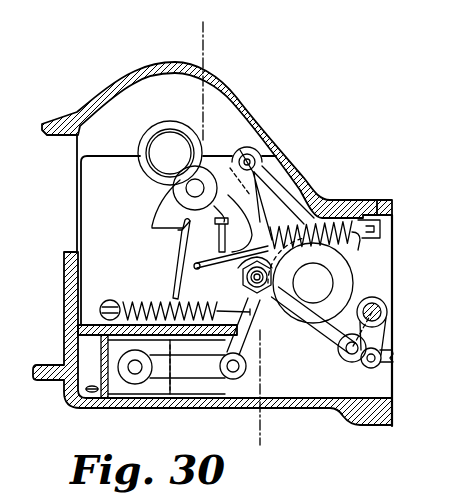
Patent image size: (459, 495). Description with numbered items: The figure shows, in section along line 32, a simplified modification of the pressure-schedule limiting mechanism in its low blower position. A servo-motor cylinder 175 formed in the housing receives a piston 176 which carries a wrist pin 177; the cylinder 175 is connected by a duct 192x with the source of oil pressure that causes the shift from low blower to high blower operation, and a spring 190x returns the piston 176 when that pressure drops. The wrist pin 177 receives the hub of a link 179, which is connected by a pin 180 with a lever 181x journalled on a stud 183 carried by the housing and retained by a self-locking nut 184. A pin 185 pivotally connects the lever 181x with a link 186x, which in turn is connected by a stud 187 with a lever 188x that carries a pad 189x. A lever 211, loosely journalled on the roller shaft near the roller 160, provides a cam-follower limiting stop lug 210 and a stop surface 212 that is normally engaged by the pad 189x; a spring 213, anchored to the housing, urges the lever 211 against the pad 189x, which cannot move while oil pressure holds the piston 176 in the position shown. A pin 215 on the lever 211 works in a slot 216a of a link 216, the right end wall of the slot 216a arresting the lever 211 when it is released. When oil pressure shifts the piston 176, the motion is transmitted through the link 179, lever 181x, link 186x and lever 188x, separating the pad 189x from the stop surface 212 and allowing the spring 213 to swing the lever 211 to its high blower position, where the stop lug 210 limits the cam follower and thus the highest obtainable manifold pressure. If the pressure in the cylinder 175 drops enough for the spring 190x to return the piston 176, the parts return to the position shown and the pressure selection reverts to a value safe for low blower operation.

The section line 32- 32 is at (213, 46).
The roller 160 is at (186, 188).
The cylinder 175 is at (68, 383).
The piston 176 is at (101, 360).
The wrist pin 177 is at (134, 375).
The link 179 is at (206, 375).
The pin 180 is at (242, 372).
The lever 181x is at (250, 344).
The stud 183 is at (270, 279).
The self-locking nut 184 is at (268, 290).
The pin 185 is at (318, 214).
The link 186x is at (296, 190).
The stud 187 is at (250, 157).
The lever 188x is at (262, 168).
The pad 189x is at (234, 210).
The spring 190x is at (100, 325).
The duct 192x is at (90, 393).
The cam-follower limiting stop lug 210 is at (160, 232).
The lever 211 is at (180, 277).
The stop surface 212 is at (219, 238).
The spring 213 is at (350, 244).
The pin 215 is at (199, 283).
The link 216 is at (333, 346).
The slot 216a is at (175, 295).